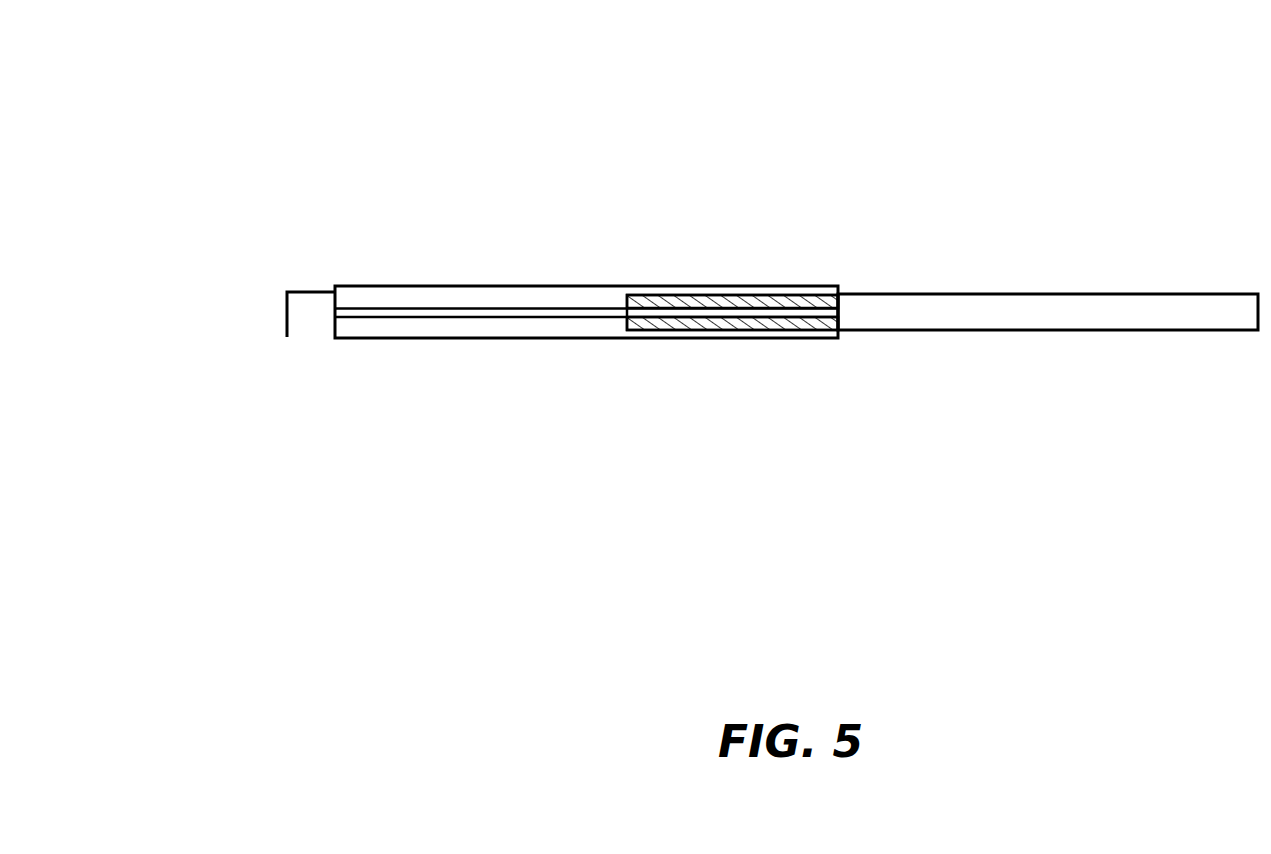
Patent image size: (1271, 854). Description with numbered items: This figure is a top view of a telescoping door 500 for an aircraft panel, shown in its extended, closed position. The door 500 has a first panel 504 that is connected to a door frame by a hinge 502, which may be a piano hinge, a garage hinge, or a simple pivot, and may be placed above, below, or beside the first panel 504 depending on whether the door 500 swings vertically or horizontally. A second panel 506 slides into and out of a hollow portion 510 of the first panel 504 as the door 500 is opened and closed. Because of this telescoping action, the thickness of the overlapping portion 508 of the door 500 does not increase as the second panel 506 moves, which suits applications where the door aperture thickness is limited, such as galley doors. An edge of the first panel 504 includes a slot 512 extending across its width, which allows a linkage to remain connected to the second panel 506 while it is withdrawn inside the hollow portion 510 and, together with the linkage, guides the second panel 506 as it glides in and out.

The telescoping door 500 is at (210, 55).
The hinge 502 is at (285, 296).
The first panel 504 is at (586, 293).
The second panel 506 is at (1048, 294).
The overlapping portion 508 is at (732, 353).
The hollow portion 510 is at (729, 276).
The slot 512 is at (586, 280).